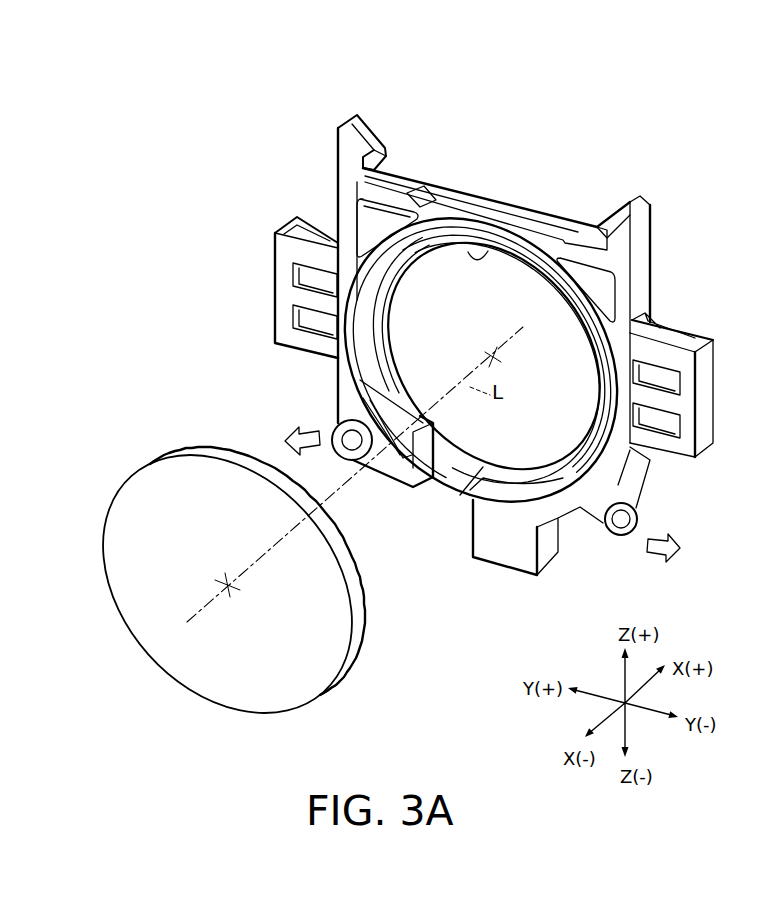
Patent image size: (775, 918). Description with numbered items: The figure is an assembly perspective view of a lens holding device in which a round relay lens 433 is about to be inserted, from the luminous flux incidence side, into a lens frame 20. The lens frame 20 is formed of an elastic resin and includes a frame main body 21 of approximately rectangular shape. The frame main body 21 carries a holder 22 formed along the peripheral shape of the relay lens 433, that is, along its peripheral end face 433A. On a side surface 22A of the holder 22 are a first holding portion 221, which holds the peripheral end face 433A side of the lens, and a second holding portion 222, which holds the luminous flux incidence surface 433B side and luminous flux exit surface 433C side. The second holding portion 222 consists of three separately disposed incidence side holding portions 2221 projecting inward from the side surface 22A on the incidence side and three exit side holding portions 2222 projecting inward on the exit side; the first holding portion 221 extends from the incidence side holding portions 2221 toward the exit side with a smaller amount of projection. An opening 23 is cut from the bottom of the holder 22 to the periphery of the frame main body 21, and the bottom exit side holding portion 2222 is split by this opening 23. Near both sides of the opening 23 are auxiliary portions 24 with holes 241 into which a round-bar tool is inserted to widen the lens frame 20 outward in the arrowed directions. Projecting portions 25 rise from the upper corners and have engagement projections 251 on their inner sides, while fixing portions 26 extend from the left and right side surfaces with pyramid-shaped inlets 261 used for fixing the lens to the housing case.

The lens frame 20 is at (546, 86).
The frame main body 21 is at (455, 201).
The holder 22 is at (513, 280).
The side surface 22A is at (362, 322).
The first holding portion 221 is at (400, 395).
The second holding portion 222 is at (466, 353).
The incidence side holding portion 2221 is at (487, 253).
The exit side holding portion 2222 is at (382, 340).
The opening 23 is at (473, 517).
The auxiliary portion 24 is at (491, 509).
The hole 241 is at (352, 447).
The projecting portion 25 is at (348, 158).
The engagement projection 251 is at (377, 135).
The fixing portion 26 is at (283, 292).
The pyramid-shaped inlet 261 is at (310, 228).
The relay lens 433 is at (210, 687).
The peripheral end face 433A is at (357, 647).
The luminous flux incidence surface 433B is at (320, 677).
The luminous flux exit surface 433C is at (367, 612).